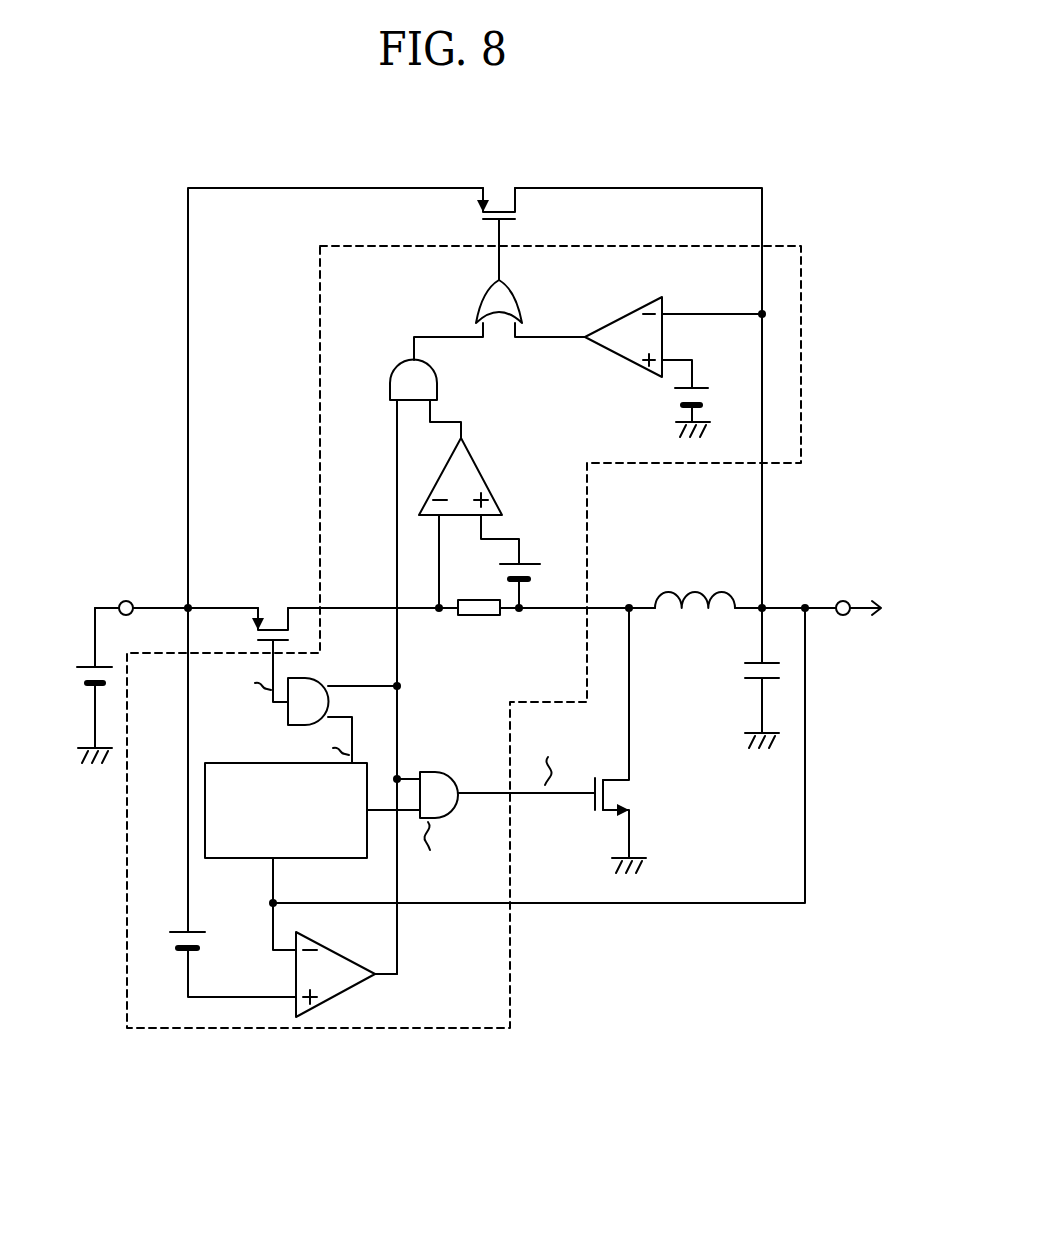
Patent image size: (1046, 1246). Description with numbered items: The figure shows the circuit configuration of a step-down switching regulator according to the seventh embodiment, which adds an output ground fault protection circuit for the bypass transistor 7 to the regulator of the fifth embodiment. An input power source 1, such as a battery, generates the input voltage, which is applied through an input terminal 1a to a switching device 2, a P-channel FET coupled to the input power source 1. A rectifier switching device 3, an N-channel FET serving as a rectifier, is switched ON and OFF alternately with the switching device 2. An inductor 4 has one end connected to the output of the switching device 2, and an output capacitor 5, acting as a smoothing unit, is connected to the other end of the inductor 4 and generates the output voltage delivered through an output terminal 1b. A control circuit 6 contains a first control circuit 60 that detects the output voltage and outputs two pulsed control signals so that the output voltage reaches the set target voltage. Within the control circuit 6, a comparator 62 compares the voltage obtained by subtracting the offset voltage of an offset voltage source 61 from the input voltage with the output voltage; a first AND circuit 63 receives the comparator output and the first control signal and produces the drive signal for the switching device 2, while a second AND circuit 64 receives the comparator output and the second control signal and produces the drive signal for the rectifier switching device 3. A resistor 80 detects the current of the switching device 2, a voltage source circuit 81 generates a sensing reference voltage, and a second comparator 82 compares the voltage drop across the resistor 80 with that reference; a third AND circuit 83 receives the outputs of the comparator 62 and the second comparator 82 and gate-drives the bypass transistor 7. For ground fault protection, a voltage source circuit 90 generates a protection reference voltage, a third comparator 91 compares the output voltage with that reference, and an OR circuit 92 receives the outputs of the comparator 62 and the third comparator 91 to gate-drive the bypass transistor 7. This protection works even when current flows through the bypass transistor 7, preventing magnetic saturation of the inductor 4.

The input power source 1 is at (88, 683).
The input terminal 1a is at (127, 599).
The output terminal 1b is at (843, 617).
The switching device 2 is at (283, 622).
The rectifier switching device 3 is at (620, 787).
The inductor 4 is at (692, 588).
The output capacitor 5 is at (750, 678).
The control circuit 6 is at (510, 958).
The bypass transistor 7 is at (513, 200).
The first control circuit 60 is at (243, 860).
The offset voltage source 61 is at (190, 951).
The comparator 62 is at (343, 985).
The first AND circuit 63 is at (283, 715).
The second AND circuit 64 is at (442, 770).
The resistor 80 is at (472, 617).
The voltage source circuit 81 is at (507, 565).
The second comparator 82 is at (486, 469).
The third AND circuit 83 is at (390, 383).
The voltage source circuit 90 is at (678, 390).
The third comparator 91 is at (615, 357).
The OR circuit 92 is at (517, 297).